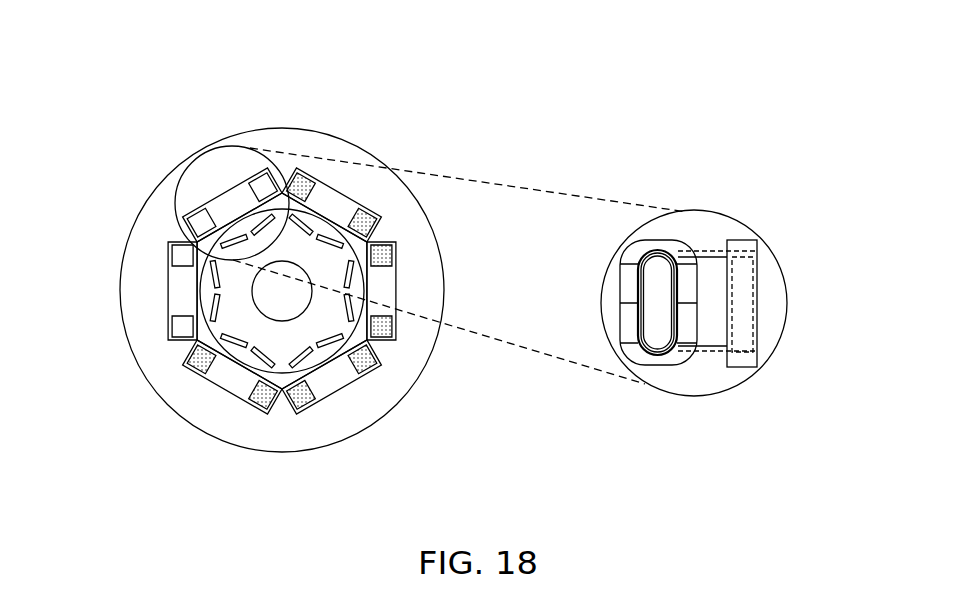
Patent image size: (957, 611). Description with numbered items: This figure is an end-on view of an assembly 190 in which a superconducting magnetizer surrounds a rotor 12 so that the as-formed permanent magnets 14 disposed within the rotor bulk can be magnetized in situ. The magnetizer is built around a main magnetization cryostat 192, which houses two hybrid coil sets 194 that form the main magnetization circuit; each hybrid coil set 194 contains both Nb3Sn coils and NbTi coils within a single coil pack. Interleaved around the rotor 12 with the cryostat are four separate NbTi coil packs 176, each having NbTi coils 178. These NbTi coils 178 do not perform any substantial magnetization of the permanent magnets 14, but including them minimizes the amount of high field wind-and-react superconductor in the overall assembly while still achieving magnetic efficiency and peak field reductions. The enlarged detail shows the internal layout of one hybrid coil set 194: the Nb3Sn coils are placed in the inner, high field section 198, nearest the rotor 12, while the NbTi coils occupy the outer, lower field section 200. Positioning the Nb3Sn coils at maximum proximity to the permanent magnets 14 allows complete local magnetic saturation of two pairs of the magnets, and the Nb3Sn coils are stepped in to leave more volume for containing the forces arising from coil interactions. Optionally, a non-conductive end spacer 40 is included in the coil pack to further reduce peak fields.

The assembly 190 is at (152, 70).
The rotor 12 is at (359, 249).
The permanent magnets 14 is at (368, 293).
The main magnetization cryostat 192 is at (170, 240).
The hybrid coil sets 194 is at (200, 220).
The NbTi coil packs 176 is at (228, 390).
The NbTi coils 178 is at (368, 357).
The inner, high field section 198 is at (658, 262).
The outer, lower field section 200 is at (637, 252).
The end spacer 40 is at (657, 352).